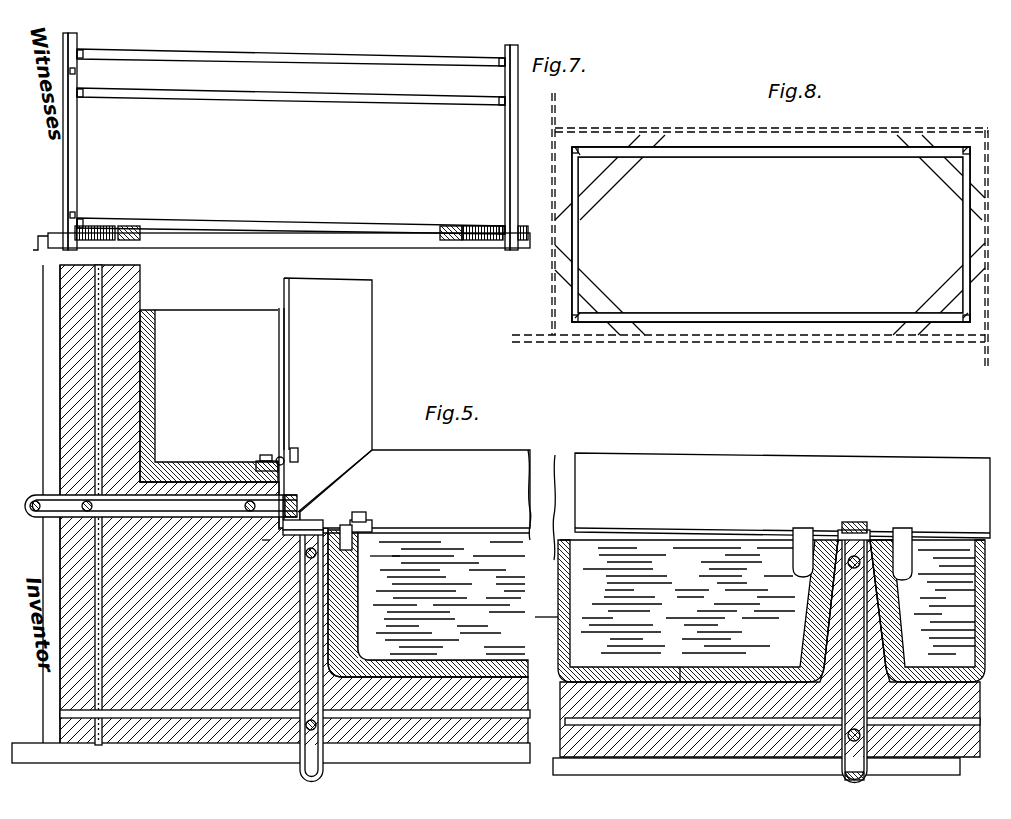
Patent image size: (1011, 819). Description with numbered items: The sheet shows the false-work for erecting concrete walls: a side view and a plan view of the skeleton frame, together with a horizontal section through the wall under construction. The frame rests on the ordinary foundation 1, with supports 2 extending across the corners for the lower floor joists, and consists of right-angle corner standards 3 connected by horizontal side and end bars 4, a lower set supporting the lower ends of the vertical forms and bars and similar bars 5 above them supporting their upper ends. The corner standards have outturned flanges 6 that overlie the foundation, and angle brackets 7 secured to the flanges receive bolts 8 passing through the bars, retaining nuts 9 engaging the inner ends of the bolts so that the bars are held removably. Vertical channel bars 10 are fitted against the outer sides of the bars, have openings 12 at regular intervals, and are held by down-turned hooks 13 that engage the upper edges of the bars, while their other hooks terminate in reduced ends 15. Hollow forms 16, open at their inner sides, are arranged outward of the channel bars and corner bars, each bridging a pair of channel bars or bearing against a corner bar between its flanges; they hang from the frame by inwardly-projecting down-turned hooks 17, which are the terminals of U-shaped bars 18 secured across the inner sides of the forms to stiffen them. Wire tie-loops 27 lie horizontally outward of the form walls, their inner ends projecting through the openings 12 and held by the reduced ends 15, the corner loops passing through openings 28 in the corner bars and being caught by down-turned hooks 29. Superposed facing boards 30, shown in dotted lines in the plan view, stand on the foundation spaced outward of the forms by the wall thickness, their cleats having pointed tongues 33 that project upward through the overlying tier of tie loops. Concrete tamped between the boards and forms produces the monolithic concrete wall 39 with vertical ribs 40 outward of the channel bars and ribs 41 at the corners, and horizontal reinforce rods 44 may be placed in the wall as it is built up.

In FIG. 7, the foundation 1 is at (45, 230).
In FIG. 8, the foundation 1 is at (727, 328).
In FIG. 5, the foundation 1 is at (546, 616).
In FIG. 7, the supports 2 is at (118, 226).
In FIG. 8, the supports 2 is at (605, 178).
In FIG. 7, the corner standards 3 is at (77, 145).
In FIG. 8, the corner standards 3 is at (575, 147).
In FIG. 5, the corner standards 3 is at (262, 540).
In FIG. 7, the horizontal side and end bars 4 is at (285, 47).
In FIG. 8, the horizontal side and end bars 4 is at (782, 158).
In FIG. 5, the horizontal side and end bars 4 is at (350, 409).
In FIG. 7, the upper bars 5 is at (255, 96).
In FIG. 7, the outturned flanges 6 is at (63, 125).
In FIG. 8, the outturned flanges 6 is at (964, 150).
In FIG. 5, the outturned flanges 6 is at (266, 468).
In FIG. 7, the angle brackets 7 is at (82, 92).
In FIG. 5, the angle brackets 7 is at (272, 452).
In FIG. 7, the bolts 8 is at (70, 70).
In FIG. 5, the bolts 8 is at (276, 460).
In FIG. 5, the retaining nuts 9 is at (297, 455).
In FIG. 5, the channel bars 10 is at (838, 530).
In FIG. 5, the openings 12 is at (866, 552).
In FIG. 5, the down-turned hooks 13 is at (88, 500).
In FIG. 5, the reduced ends 15 is at (855, 522).
In FIG. 5, the hollow forms 16 is at (162, 322).
In FIG. 5, the inwardly-projecting down-turned hooks 17 is at (360, 556).
In FIG. 5, the U-shaped bars 18 is at (687, 672).
In FIG. 5, the wire tie-loops 27 is at (330, 652).
In FIG. 5, the openings in corner bars 28 is at (308, 512).
In FIG. 5, the down-turned hooks on corner bars 29 is at (250, 525).
In FIG. 8, the facing boards 30 is at (748, 130).
In FIG. 5, the facing boards 30 is at (55, 405).
In FIG. 5, the upward tongues 33 is at (30, 500).
In FIG. 5, the monolithic concrete wall 39 is at (66, 325).
In FIG. 5, the vertical ribs 40 is at (835, 622).
In FIG. 5, the vertical ribs at corners 41 is at (235, 615).
In FIG. 5, the horizontal reinforce rods 44 is at (95, 362).